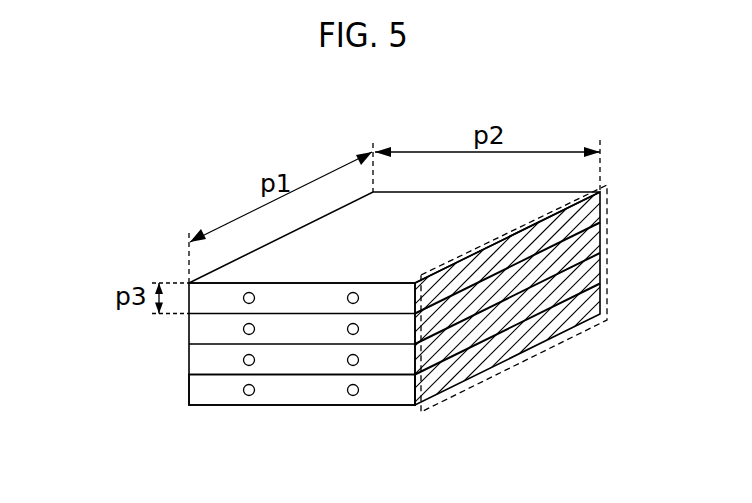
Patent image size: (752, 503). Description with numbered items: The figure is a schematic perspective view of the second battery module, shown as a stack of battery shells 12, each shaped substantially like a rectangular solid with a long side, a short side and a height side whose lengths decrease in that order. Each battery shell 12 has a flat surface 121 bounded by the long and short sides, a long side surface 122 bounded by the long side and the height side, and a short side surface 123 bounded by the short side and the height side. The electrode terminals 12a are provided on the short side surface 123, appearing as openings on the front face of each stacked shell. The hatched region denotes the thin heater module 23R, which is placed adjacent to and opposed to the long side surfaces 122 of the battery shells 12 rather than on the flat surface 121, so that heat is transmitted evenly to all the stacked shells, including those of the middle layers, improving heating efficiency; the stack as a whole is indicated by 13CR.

The battery shell 12 is at (222, 388).
The electrode terminal 12a is at (249, 292).
The flat surface 121 is at (545, 197).
The long side surface 122 is at (580, 218).
The short side surface 123 is at (390, 302).
The core region 13CR is at (394, 309).
The thin heater module 23R is at (525, 363).